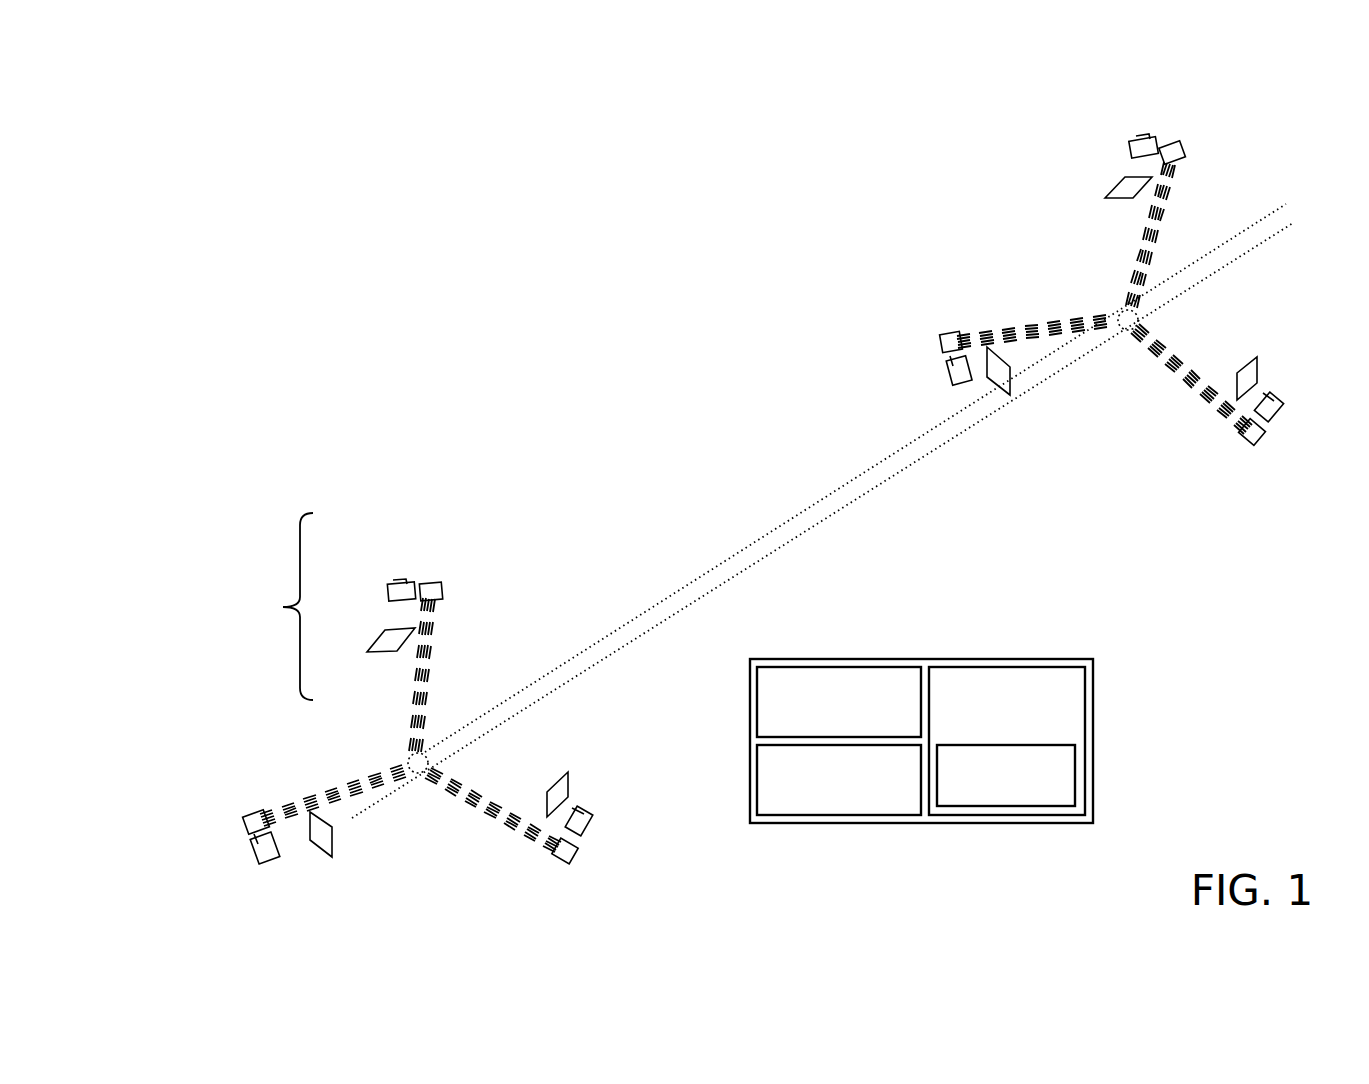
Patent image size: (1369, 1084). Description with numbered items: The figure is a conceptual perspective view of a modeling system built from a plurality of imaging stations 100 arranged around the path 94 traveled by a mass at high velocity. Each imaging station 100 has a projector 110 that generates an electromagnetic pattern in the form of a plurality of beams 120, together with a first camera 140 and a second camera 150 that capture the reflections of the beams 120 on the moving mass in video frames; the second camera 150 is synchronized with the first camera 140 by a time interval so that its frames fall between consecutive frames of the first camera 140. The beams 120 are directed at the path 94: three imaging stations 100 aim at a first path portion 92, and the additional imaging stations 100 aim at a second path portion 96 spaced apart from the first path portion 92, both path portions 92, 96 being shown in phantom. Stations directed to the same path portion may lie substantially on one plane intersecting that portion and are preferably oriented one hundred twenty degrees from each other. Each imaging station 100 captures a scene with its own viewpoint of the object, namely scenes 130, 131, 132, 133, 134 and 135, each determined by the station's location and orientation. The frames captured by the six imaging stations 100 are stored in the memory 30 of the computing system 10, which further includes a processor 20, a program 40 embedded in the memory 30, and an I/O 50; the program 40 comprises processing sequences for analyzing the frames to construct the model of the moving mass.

The computing system 10 is at (971, 741).
The processor 20 is at (826, 807).
The memory 30 is at (994, 729).
The program 40 is at (993, 804).
The I/O 50 is at (826, 729).
The first path portion 92 is at (416, 774).
The path 94 is at (715, 577).
The second path portion 96 is at (1122, 314).
The imaging station 100 is at (271, 606).
The projector 110 is at (432, 582).
The beams 120 is at (443, 630).
The scene 130 is at (320, 850).
The scene 131 is at (568, 790).
The scene 132 is at (376, 645).
The scene 133 is at (1012, 383).
The scene 134 is at (1262, 376).
The scene 135 is at (1108, 194).
The first camera 140 is at (408, 582).
The second camera 150 is at (394, 584).